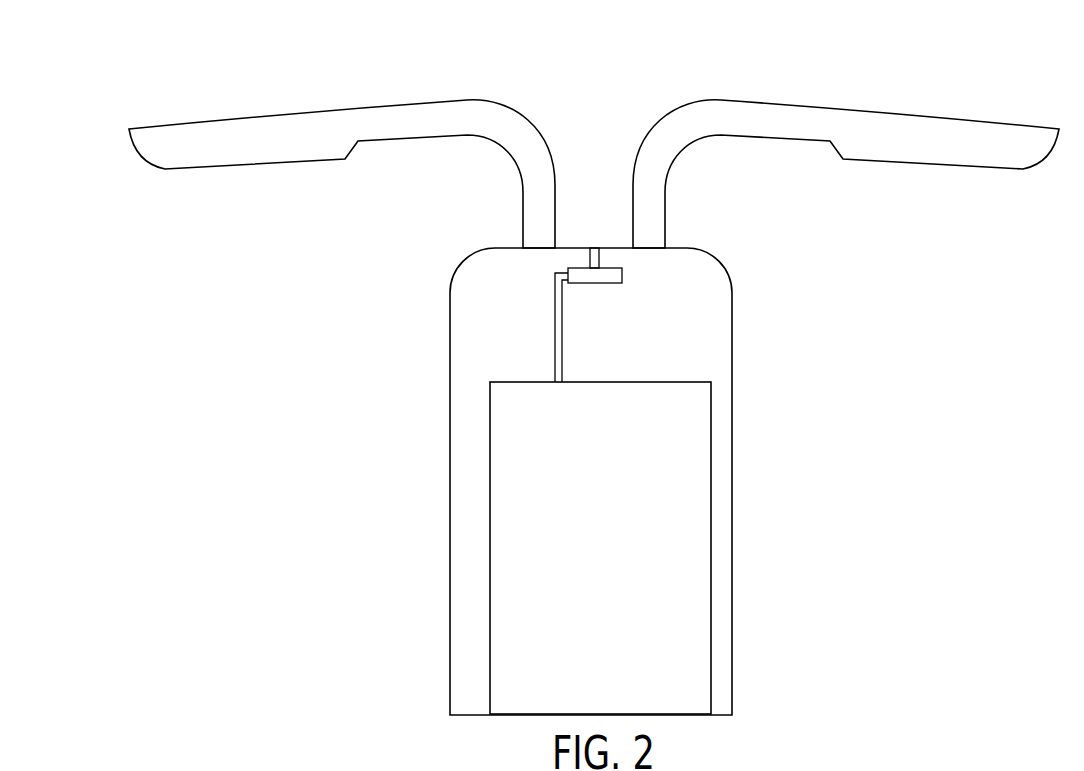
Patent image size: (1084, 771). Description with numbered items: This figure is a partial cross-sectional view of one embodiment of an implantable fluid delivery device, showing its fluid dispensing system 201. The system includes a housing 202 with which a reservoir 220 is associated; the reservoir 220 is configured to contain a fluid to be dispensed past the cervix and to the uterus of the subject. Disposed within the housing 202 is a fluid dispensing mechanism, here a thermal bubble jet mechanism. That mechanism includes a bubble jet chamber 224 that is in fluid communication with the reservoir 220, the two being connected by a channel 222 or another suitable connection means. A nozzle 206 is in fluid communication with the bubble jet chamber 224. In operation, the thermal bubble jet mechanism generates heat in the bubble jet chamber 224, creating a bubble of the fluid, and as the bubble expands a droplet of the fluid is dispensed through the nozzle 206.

The fluid dispensing system 201 is at (1022, 88).
The housing 202 is at (720, 440).
The nozzle 206 is at (592, 248).
The reservoir 220 is at (512, 570).
The channel 222 is at (555, 380).
The bubble jet chamber 224 is at (600, 278).